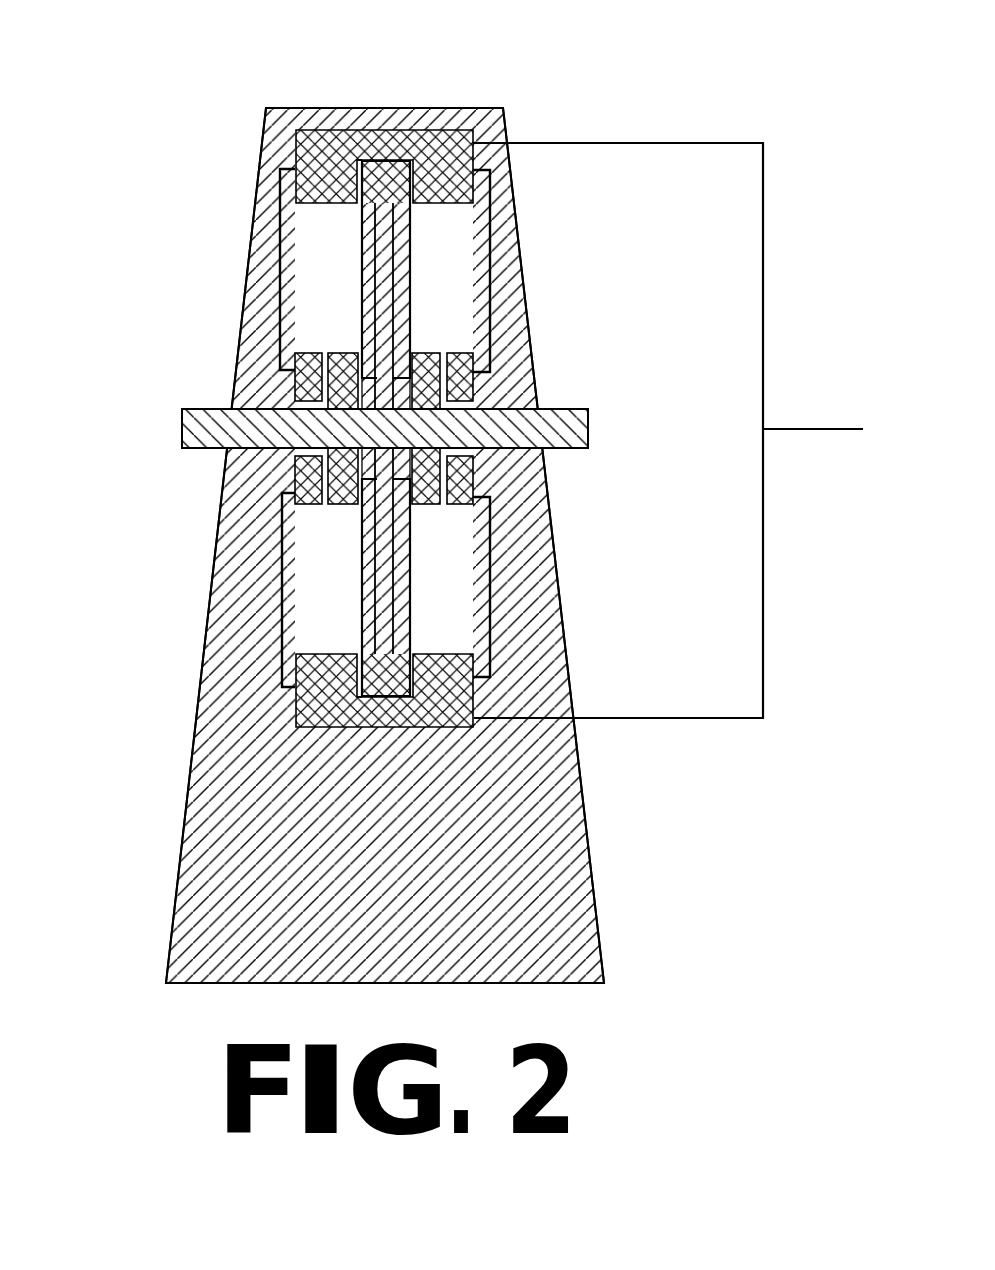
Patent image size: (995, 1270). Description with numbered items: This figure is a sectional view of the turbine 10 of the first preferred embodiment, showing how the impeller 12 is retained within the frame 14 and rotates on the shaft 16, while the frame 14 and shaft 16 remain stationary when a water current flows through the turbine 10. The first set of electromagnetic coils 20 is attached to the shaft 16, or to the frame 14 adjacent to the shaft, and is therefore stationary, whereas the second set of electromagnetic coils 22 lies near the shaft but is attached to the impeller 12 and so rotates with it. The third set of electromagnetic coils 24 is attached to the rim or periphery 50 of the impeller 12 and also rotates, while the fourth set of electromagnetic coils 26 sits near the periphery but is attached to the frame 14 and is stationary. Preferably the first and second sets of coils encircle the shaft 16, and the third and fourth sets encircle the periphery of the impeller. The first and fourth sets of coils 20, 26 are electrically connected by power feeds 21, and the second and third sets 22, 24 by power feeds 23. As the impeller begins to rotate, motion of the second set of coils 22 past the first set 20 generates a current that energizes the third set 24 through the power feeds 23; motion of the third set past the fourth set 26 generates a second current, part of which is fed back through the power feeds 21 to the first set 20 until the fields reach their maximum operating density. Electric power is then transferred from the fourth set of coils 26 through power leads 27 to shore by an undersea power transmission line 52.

The turbine 10 is at (266, 108).
The impeller 12 is at (362, 263).
The frame 14 is at (197, 705).
The shaft 16 is at (182, 425).
The first set of electromagnetic coils 20 is at (295, 385).
The power feeds 21 is at (280, 202).
The second set of electromagnetic coils 22 is at (343, 353).
The power feeds 23 is at (407, 257).
The third set of electromagnetic coils 24 is at (352, 205).
The fourth set of electromagnetic coils 26 is at (363, 108).
The power leads 27 is at (763, 143).
The rim or periphery 50 is at (407, 205).
The undersea power transmission line 52 is at (817, 428).